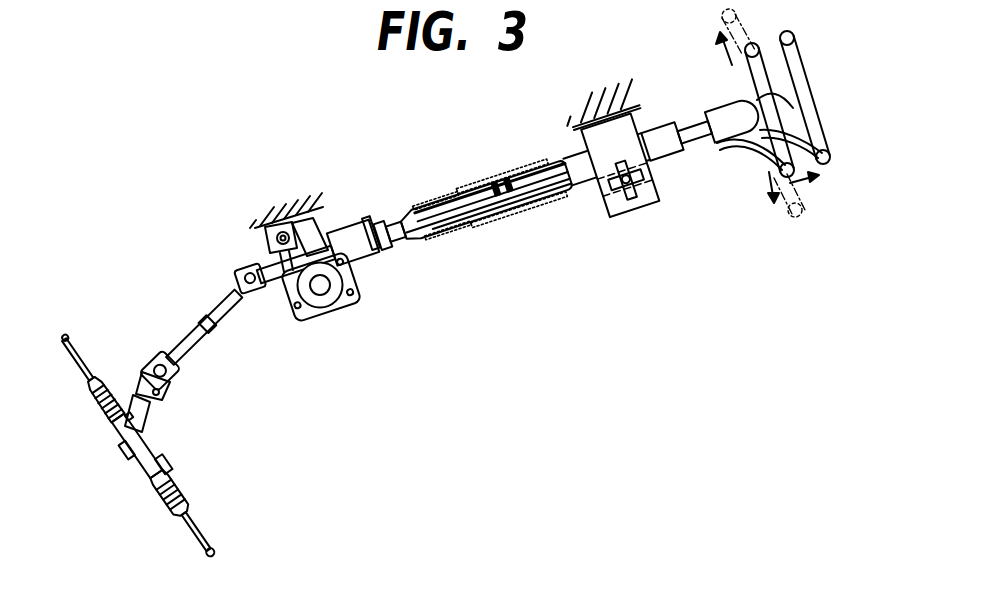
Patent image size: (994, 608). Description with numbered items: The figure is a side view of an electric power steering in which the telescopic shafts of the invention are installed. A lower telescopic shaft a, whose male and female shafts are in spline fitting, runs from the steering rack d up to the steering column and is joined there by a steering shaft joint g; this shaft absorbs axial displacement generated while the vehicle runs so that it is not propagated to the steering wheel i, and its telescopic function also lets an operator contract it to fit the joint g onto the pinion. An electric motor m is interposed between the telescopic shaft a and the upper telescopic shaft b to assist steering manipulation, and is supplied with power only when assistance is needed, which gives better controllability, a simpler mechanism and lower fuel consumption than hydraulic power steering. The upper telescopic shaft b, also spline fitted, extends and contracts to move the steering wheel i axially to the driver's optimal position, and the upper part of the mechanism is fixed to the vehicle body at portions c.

The telescopic shaft a is at (212, 330).
The telescopic shaft b is at (486, 226).
The portion for fixing an upper part of the steering mechanism c is at (291, 210).
The steering rack d is at (119, 431).
The steering shaft joint g is at (152, 396).
The steering wheel i is at (773, 74).
The electric motor m is at (343, 303).